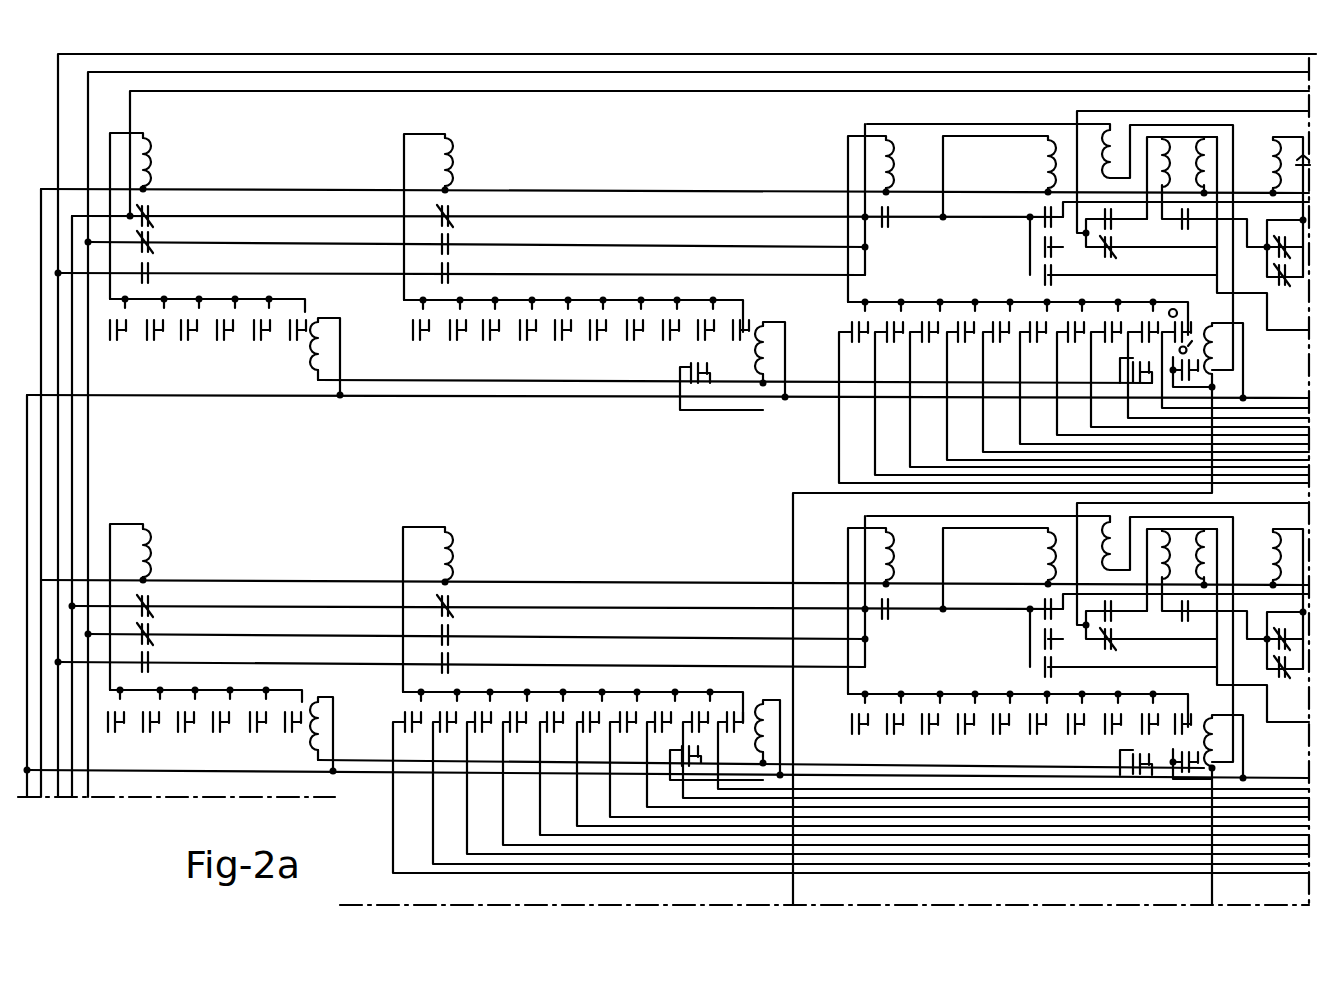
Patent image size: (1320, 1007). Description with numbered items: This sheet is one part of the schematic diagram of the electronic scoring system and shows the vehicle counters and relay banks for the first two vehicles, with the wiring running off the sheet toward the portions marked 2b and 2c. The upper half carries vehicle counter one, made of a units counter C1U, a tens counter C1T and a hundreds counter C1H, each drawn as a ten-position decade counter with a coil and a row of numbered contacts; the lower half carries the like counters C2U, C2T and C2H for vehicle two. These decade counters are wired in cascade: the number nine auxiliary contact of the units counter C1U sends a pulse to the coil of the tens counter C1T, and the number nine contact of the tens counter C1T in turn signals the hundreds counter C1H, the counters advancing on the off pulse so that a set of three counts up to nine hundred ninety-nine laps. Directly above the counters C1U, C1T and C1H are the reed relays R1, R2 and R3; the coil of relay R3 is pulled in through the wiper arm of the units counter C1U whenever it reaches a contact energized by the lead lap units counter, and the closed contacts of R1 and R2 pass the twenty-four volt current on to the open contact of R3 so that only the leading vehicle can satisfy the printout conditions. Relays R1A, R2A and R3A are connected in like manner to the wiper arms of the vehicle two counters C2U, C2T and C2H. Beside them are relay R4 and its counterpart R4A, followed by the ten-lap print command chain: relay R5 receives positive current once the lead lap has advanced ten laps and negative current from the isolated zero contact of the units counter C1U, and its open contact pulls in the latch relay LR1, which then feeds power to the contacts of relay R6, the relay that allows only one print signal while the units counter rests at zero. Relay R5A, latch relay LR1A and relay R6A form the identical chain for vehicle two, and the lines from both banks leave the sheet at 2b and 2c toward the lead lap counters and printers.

The reed relay R1 is at (140, 216).
The reed relay R2 is at (441, 217).
The reed relay R3 is at (881, 219).
The relay R4 is at (999, 176).
The relay R5 is at (1093, 154).
The latch relay LR1 is at (1225, 192).
The relay R6 is at (1283, 199).
The hundreds counter C1H is at (208, 309).
The tens counter C1T is at (576, 309).
The units counter C1U is at (1074, 382).
The reed relay R1A is at (144, 607).
The reed relay R2A is at (444, 609).
The reed relay R3A is at (886, 611).
The relay R4A is at (999, 568).
The relay R5A is at (1093, 546).
The latch relay LR1A is at (1225, 584).
The relay R6A is at (1275, 603).
The hundreds counter C2H is at (205, 701).
The tens counter C2T is at (851, 771).
The units counter C2U is at (1019, 702).
The continuation sheet 2b is at (1294, 466).
The continuation sheet 2c is at (642, 858).